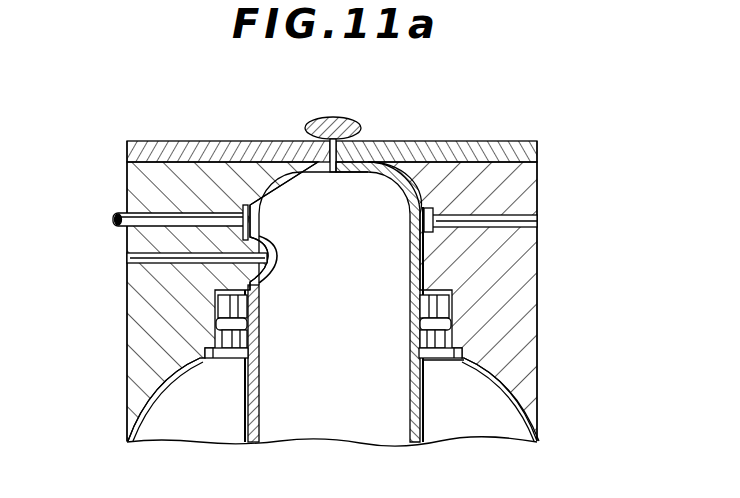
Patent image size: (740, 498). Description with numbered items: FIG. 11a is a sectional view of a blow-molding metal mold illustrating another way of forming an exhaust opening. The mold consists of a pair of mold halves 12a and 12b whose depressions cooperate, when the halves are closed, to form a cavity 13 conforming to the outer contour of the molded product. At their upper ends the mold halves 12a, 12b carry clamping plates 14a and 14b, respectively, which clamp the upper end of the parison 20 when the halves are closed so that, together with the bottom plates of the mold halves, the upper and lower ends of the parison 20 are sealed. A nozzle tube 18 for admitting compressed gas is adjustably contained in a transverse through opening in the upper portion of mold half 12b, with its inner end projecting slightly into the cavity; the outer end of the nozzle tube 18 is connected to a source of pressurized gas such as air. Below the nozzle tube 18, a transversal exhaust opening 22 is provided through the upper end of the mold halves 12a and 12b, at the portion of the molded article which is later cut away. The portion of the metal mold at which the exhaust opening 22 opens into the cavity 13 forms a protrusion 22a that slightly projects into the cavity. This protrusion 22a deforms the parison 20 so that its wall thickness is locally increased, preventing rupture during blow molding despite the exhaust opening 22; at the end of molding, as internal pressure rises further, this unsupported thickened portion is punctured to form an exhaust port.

The mold half 12a is at (518, 285).
The mold half 12b is at (152, 363).
The cavity 13 is at (427, 367).
The clamping plate 14a is at (463, 150).
The clamping plate 14b is at (205, 150).
The nozzle tube 18 is at (137, 217).
The parison 20 is at (350, 341).
The exhaust opening 22 is at (163, 260).
The protrusion 22a is at (270, 243).